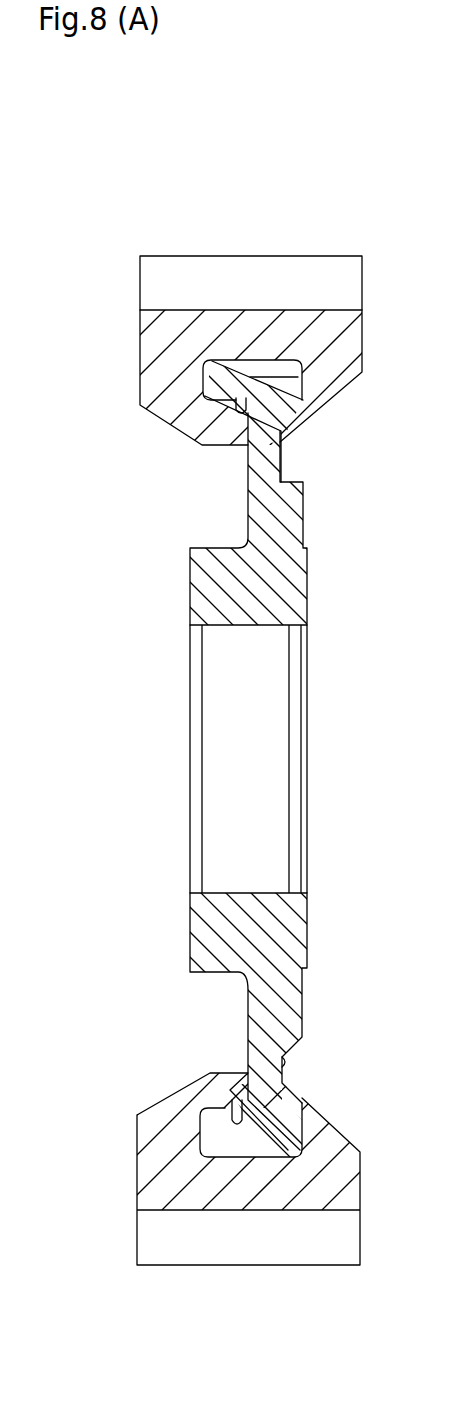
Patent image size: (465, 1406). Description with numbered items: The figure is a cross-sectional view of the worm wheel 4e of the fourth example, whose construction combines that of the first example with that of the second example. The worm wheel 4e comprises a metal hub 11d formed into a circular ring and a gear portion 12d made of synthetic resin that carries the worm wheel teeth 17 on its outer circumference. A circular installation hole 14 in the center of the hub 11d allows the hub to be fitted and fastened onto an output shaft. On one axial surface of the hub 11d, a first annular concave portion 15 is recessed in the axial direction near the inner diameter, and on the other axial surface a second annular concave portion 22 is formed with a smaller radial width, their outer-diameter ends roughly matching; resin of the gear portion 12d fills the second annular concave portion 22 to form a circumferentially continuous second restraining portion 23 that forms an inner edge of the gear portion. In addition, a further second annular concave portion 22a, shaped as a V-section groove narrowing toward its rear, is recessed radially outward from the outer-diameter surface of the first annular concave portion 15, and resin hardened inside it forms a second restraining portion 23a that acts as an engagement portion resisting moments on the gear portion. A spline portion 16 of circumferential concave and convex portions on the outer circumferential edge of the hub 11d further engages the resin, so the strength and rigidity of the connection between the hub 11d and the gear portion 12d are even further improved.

The worm wheel 4e is at (300, 289).
The worm wheel teeth 17 is at (175, 297).
The gear portion 12d is at (346, 341).
The spline portion 16 is at (278, 372).
The second annular concave portion 22a is at (238, 402).
The hub 11d is at (290, 494).
The installation hole 14 is at (257, 627).
The first annular concave portion 15 is at (248, 1010).
The second annular concave portion 22 is at (282, 1063).
The second restraining portion 23 is at (300, 1102).
The second restraining portion 23a is at (223, 1100).